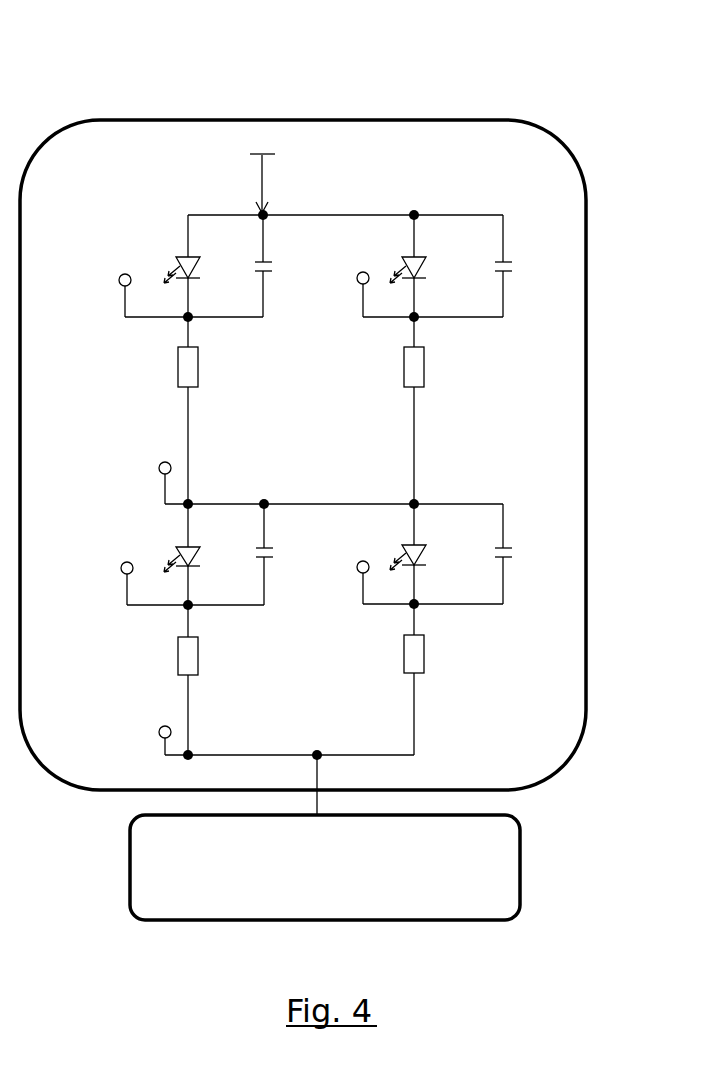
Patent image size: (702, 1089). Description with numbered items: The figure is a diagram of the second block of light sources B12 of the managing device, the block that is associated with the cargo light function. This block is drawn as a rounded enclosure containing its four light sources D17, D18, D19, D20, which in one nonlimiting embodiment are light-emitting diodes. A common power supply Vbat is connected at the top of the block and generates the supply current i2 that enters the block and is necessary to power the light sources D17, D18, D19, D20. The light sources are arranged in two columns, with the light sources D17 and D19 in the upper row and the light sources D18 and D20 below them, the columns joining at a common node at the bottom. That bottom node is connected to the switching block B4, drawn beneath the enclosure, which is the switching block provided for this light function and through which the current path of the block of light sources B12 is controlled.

The second block of light sources B12 is at (228, 120).
The common power supply Vbat is at (262, 171).
The supply current i2 is at (278, 196).
The light source D17 is at (205, 270).
The light source D18 is at (206, 559).
The light source D19 is at (434, 270).
The light source D20 is at (434, 557).
The switching block B4 is at (325, 837).